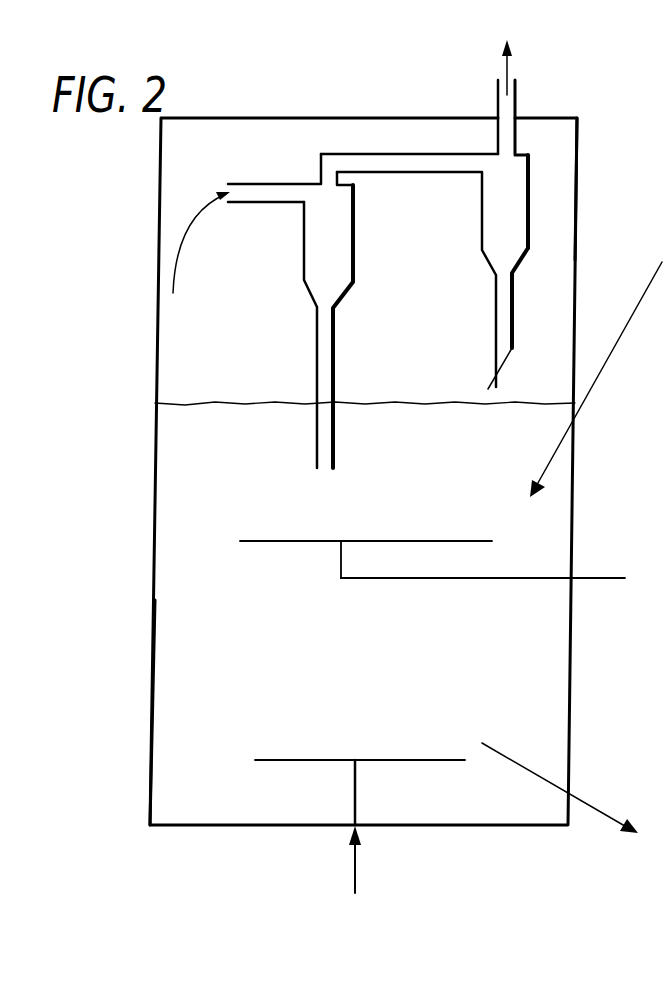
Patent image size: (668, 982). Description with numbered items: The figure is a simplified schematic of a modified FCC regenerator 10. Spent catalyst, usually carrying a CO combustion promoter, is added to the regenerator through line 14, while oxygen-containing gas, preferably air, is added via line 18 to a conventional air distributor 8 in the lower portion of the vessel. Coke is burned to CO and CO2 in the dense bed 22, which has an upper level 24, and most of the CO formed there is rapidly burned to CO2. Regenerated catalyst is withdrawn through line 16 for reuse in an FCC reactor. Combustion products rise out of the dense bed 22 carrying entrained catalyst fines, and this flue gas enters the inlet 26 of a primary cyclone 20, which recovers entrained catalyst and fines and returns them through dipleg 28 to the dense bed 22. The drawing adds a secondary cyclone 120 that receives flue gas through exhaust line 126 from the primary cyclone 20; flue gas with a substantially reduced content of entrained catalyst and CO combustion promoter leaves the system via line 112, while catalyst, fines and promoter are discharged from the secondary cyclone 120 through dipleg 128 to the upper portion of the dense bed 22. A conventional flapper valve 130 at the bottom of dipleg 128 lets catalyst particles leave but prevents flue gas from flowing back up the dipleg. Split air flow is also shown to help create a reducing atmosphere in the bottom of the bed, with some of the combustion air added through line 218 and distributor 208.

The air distributor 8 is at (440, 760).
The regenerator 10 is at (152, 563).
The line 14 is at (597, 390).
The line 16 is at (600, 810).
The line 18 is at (360, 858).
The cyclone 20 is at (357, 218).
The dense bed 22 is at (165, 683).
The upper level 24 is at (180, 400).
The inlet 26 is at (263, 183).
The dipleg 28 is at (336, 362).
The line 112 is at (517, 110).
The secondary cyclone 120 is at (528, 210).
The exhaust line 126 is at (422, 155).
The dipleg 128 is at (513, 305).
The flapper valve 130 is at (490, 381).
The distributor 208 is at (416, 543).
The line 218 is at (575, 580).